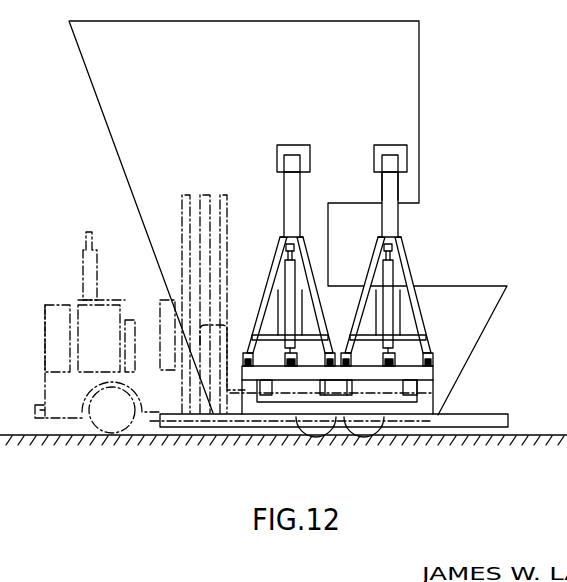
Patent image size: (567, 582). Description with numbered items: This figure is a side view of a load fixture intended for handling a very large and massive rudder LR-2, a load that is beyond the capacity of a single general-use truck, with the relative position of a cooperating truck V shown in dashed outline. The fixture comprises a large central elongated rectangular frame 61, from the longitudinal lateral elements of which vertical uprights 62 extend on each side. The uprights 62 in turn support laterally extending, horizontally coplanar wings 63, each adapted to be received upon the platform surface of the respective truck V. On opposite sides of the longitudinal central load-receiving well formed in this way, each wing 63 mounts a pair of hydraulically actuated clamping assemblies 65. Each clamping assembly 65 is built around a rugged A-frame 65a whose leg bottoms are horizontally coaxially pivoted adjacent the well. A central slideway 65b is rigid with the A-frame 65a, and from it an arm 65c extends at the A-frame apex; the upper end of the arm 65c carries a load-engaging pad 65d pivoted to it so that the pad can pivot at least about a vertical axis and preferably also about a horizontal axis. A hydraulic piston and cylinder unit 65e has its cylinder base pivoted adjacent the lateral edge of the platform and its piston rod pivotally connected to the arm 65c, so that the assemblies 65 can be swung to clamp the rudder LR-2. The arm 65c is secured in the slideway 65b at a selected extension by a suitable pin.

The rudder LR-2 is at (431, 44).
The cooperating truck V is at (110, 435).
The central elongated rectangular frame 61 is at (220, 418).
The vertical uprights 62 is at (384, 404).
The wings 63 is at (428, 372).
The hydraulically actuated clamping assemblies 65 is at (281, 193).
The A-frame 65a is at (415, 273).
The central slideway 65b is at (398, 237).
The arm 65c is at (393, 185).
The load-engaging pad 65d is at (304, 147).
The hydraulic piston and cylinder unit 65e is at (397, 315).